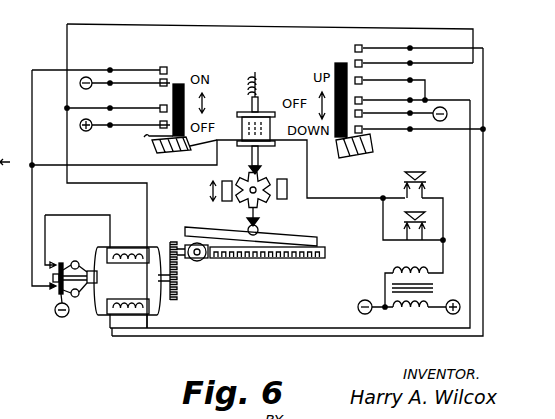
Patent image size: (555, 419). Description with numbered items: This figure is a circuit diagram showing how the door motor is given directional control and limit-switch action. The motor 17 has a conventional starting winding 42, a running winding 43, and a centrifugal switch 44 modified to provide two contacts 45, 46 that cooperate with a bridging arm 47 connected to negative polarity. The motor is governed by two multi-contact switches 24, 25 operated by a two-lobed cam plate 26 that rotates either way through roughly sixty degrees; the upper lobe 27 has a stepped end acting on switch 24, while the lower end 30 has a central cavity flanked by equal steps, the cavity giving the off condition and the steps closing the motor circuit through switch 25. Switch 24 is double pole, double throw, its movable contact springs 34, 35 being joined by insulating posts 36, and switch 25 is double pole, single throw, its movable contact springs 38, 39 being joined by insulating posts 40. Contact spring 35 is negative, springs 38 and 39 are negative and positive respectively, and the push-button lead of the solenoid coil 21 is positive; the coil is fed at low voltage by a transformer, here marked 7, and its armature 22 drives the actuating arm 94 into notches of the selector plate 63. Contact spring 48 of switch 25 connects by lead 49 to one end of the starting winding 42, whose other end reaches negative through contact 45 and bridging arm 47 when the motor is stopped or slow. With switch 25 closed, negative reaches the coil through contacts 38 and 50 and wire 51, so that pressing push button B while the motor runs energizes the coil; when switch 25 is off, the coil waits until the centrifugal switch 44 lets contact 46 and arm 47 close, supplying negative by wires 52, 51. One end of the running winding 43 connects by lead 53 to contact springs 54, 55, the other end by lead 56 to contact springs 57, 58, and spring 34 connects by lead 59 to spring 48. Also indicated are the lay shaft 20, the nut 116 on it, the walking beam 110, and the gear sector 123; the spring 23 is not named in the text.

The transformer 7 is at (406, 267).
The motor 17 is at (158, 302).
The lay shaft 20 is at (310, 258).
The solenoid coil 21 is at (243, 112).
The armature 22 is at (259, 101).
The spring 23 is at (250, 73).
The multi-contact switch 24 is at (416, 134).
The multi-contact switch 25 is at (125, 63).
The two-lobed cam plate 26 is at (232, 204).
The upper lobe 27 is at (346, 160).
The lower end 30 is at (204, 167).
The movable contact spring 34 is at (369, 64).
The movable contact spring 35 is at (369, 114).
The insulating posts 36 is at (337, 66).
The movable contact spring 38 is at (134, 86).
The movable contact spring 39 is at (134, 126).
The insulating posts 40 is at (179, 83).
The starting winding 42 is at (128, 250).
The running winding 43 is at (125, 308).
The centrifugal switch 44 is at (78, 256).
The contact 45 is at (55, 265).
The contact 46 is at (40, 288).
The bridging arm 47 is at (75, 289).
The contact spring 48 is at (136, 109).
The lead 49 is at (67, 112).
The contact 50 is at (160, 58).
The wire 51 is at (103, 164).
The wire 52 is at (33, 203).
The lead 53 is at (256, 336).
The contact spring 54 is at (366, 48).
The contact spring 55 is at (371, 131).
The lead 56 is at (308, 313).
The contact spring 57 is at (379, 81).
The contact spring 58 is at (384, 90).
The lead 59 is at (246, 27).
The selector plate 63 is at (263, 178).
The actuating arm 94 is at (247, 166).
The walking beam 110 is at (316, 242).
The nut 116 is at (198, 262).
The gear sector 123 is at (262, 233).
The push button B is at (430, 212).